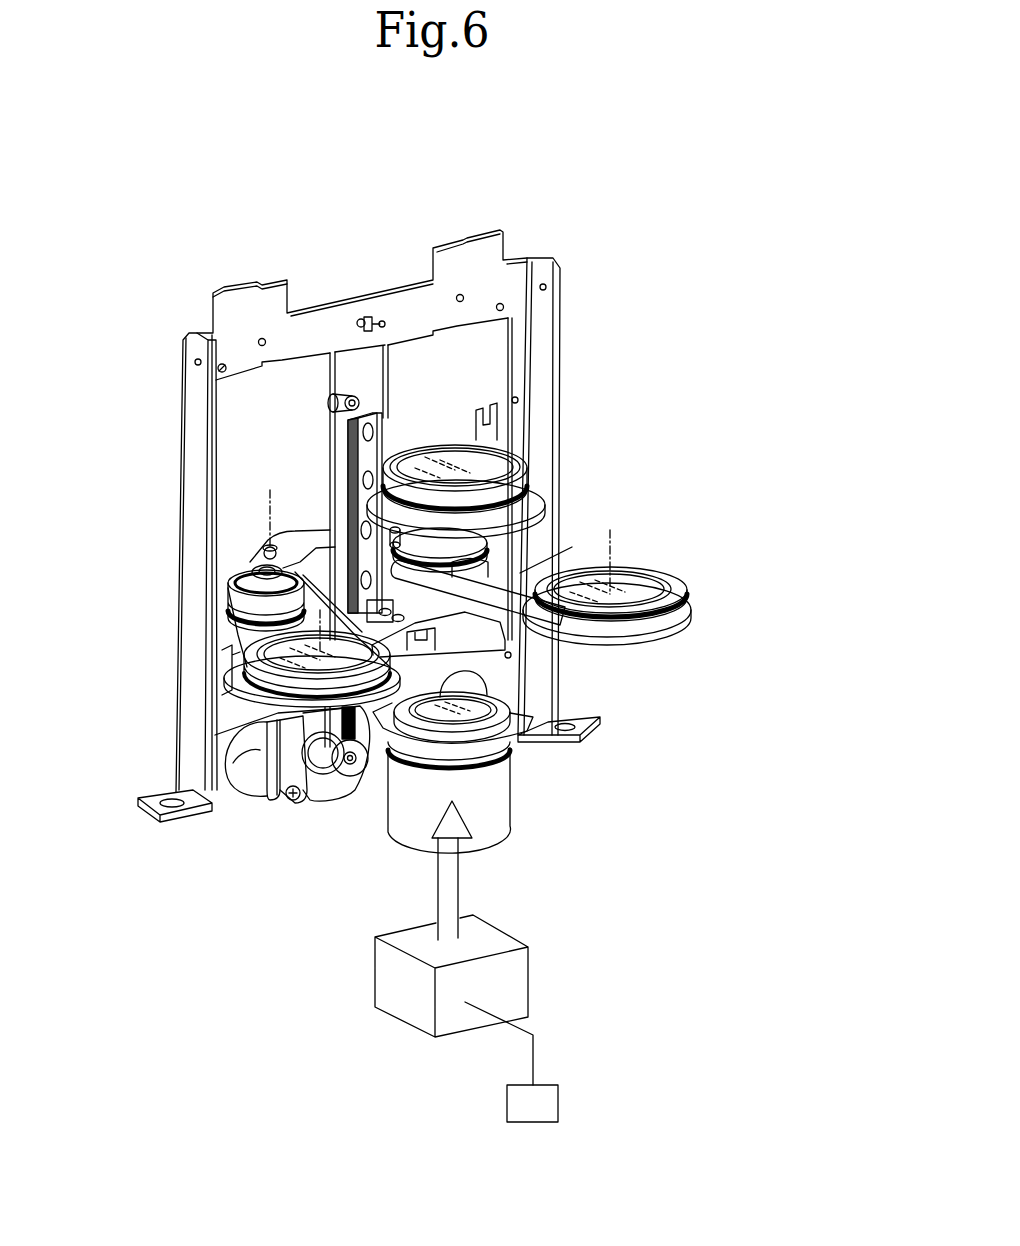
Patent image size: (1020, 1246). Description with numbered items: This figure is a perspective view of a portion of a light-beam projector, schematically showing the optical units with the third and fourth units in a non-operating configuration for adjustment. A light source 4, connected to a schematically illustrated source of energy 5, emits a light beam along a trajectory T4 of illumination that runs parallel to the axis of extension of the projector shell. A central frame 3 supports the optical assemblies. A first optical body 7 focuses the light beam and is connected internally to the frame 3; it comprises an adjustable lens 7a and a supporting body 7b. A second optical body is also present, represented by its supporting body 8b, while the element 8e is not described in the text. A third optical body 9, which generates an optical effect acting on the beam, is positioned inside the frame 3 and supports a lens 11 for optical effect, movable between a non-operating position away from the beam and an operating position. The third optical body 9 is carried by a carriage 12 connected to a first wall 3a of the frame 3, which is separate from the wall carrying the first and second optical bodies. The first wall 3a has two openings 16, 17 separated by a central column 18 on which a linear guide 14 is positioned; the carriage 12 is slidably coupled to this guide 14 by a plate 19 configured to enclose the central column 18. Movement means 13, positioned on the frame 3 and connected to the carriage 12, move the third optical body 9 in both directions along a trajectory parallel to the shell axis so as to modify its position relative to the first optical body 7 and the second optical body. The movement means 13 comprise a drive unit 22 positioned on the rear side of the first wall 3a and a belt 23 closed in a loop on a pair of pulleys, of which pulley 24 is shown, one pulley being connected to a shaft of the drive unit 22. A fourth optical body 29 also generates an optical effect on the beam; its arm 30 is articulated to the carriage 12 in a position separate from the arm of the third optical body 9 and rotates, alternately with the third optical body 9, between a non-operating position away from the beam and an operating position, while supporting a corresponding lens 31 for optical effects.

The central frame 3 is at (195, 298).
The first wall of the frame 3a is at (483, 290).
The light source 4 is at (513, 980).
The source of energy 5 is at (540, 1119).
The first optical body 7 is at (463, 804).
The lens of the first optical body 7a is at (523, 720).
The supporting body of the first optical body 7b is at (410, 823).
The supporting body of the second optical body 8b is at (495, 518).
The top plate 8e is at (482, 467).
The third optical body 9 is at (229, 672).
The lens for optical effect 11 is at (256, 645).
The carriage 12 is at (418, 609).
The movement means 13 is at (265, 816).
The linear guide 14 is at (368, 472).
The opening 16 is at (264, 379).
The opening 17 is at (475, 348).
The central column 18 is at (368, 375).
The plate 19 is at (512, 657).
The drive unit 22 is at (257, 750).
The belt 23 is at (322, 792).
The pulley 24 is at (352, 760).
The fourth optical body 29 is at (659, 575).
The arm 30 is at (614, 565).
The lens for optical effects 31 is at (640, 583).
The trajectory of illumination T4 is at (452, 880).